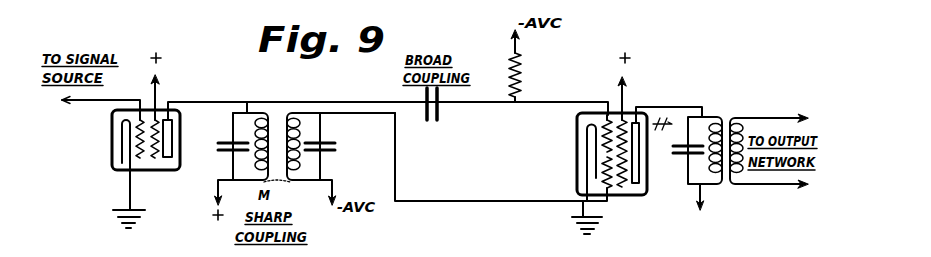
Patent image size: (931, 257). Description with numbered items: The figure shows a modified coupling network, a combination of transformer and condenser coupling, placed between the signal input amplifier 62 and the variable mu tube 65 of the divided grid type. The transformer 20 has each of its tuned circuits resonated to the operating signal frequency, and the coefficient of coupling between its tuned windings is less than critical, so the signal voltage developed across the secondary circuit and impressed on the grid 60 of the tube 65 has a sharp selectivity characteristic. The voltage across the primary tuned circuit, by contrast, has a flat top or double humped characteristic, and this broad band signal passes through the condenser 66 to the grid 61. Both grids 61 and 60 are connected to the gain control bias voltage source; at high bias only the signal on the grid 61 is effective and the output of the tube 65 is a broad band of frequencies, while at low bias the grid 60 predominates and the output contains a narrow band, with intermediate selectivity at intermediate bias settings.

The signal input amplifier 62 is at (160, 106).
The transformer 20 is at (277, 160).
The condenser 66 is at (439, 121).
The grid 60 is at (620, 155).
The grid 61 is at (614, 113).
The variable mu tube 65 is at (630, 113).